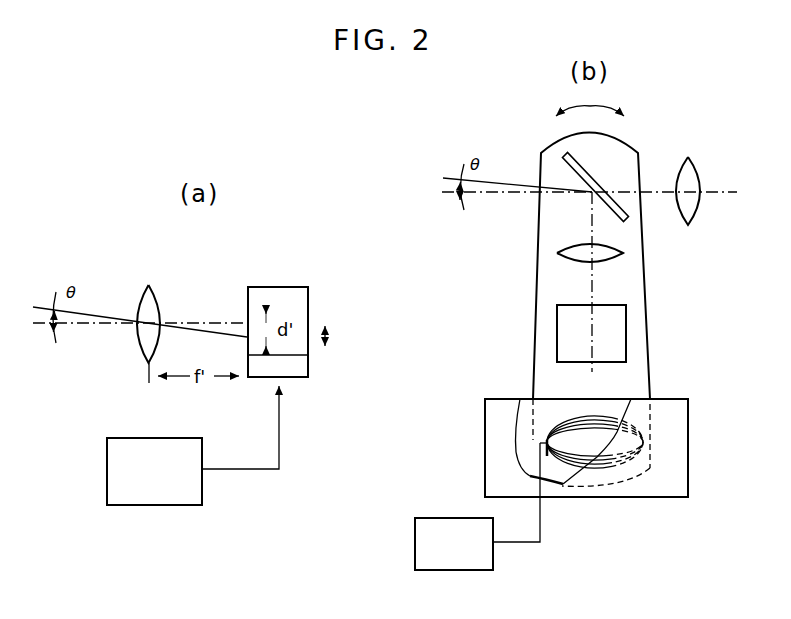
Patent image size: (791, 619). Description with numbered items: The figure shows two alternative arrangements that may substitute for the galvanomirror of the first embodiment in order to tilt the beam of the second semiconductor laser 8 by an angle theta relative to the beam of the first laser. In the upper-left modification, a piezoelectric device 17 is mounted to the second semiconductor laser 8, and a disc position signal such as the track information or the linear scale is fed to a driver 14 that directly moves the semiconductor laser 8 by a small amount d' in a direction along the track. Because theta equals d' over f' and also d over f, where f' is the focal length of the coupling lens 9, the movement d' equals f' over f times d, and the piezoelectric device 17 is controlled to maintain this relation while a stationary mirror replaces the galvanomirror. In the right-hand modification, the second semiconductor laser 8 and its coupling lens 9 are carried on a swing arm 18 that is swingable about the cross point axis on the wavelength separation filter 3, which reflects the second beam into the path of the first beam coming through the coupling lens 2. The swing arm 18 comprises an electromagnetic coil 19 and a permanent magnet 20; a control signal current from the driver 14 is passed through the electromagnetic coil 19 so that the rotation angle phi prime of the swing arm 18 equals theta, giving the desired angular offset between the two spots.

In FIG. 2b, the coupling lens 2 is at (697, 172).
In FIG. 2b, the wavelength separation filter 3 is at (596, 179).
In FIG. 2a, the second semiconductor laser 8 is at (292, 287).
In FIG. 2b, the second semiconductor laser 8 is at (568, 305).
In FIG. 2a, the coupling lens 9 is at (151, 284).
In FIG. 2b, the coupling lens 9 is at (570, 246).
In FIG. 2a, the driver 14 is at (202, 490).
In FIG. 2b, the driver 14 is at (493, 558).
In FIG. 2a, the piezoelectric device 17 is at (308, 372).
In FIG. 2b, the swing arm 18 is at (650, 370).
In FIG. 2b, the electromagnetic coil 19 is at (635, 478).
In FIG. 2b, the permanent magnet 20 is at (688, 443).